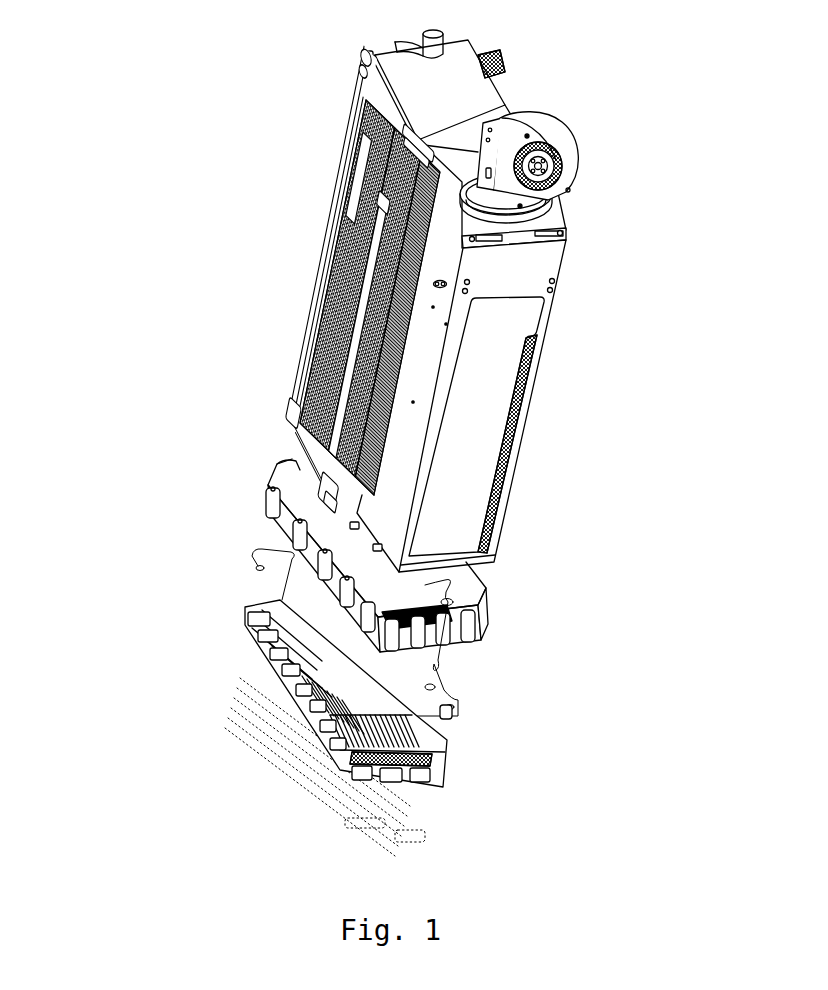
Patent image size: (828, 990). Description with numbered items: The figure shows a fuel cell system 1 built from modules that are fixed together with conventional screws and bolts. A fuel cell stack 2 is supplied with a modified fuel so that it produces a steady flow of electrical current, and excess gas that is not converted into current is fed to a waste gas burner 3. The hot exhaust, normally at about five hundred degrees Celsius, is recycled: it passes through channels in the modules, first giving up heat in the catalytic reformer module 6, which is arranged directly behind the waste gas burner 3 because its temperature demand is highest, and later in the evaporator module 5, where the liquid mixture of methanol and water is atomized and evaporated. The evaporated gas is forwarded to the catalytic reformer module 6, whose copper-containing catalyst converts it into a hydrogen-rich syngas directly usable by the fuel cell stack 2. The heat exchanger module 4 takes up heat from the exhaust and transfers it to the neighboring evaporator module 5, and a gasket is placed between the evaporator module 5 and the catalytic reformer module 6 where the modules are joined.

The fuel cell system 1 is at (228, 318).
The fuel cell stack 2 is at (333, 388).
The waste gas burner 3 is at (524, 256).
The heat exchanger module 4 is at (462, 641).
The evaporator module 5 is at (441, 775).
The catalytic reformer module 6 is at (489, 477).